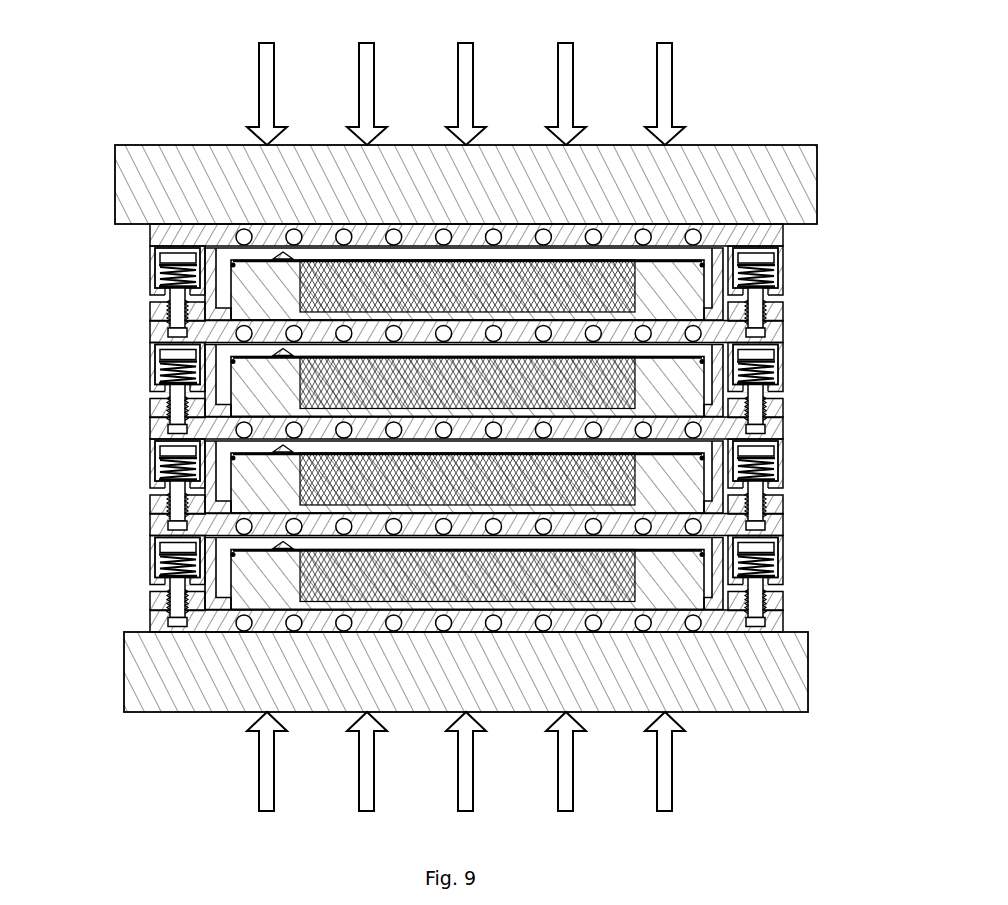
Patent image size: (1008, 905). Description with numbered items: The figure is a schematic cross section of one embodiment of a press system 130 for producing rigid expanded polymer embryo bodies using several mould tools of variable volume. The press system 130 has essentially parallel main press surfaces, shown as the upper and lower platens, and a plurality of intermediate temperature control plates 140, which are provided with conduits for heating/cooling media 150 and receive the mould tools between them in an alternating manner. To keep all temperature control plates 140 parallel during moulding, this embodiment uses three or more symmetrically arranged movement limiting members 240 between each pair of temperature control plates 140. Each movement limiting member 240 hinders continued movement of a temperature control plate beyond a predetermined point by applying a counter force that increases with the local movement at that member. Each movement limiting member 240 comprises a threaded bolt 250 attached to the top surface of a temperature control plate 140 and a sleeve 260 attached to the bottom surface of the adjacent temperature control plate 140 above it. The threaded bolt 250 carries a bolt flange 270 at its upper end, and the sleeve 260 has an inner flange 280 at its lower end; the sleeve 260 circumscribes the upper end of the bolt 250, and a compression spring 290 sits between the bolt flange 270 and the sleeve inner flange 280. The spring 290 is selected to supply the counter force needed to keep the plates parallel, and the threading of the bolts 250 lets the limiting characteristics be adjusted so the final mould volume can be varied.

The press system 130 is at (104, 100).
The conduits for heating/cooling media 150 is at (703, 224).
The temperature control plate 140 is at (783, 235).
The movement limiting member 240 is at (800, 284).
The bolt flange 270 is at (765, 450).
The compression spring 290 is at (772, 462).
The sleeve 260 is at (782, 470).
The sleeve inner flange 280 is at (770, 482).
The threaded bolt 250 is at (753, 505).